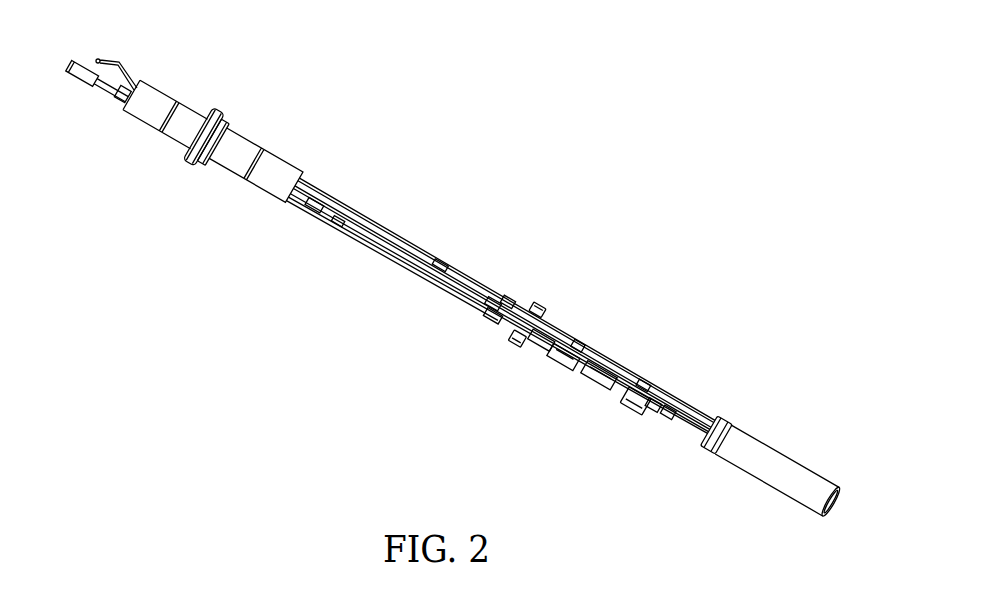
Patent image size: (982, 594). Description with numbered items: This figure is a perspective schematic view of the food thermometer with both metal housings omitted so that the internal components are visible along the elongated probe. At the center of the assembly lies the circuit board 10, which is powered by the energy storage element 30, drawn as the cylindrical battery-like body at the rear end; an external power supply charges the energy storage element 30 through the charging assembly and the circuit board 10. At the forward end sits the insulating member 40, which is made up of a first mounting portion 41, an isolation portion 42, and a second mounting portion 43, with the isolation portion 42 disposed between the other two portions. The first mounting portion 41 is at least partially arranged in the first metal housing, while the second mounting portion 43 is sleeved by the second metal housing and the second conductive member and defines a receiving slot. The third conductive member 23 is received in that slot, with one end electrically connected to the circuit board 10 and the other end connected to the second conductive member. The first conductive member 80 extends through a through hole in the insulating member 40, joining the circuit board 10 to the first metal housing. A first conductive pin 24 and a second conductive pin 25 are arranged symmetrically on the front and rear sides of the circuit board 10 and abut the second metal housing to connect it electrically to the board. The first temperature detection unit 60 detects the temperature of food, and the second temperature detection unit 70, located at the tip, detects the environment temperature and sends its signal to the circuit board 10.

The circuit board 10 is at (497, 297).
The third conductive member 23 is at (347, 220).
The first conductive pin 24 is at (547, 308).
The second conductive pin 25 is at (512, 347).
The energy storage element 30 is at (745, 438).
The insulating member 40 is at (224, 129).
The first mounting portion 41 is at (187, 110).
The isolation portion 42 is at (213, 112).
The second mounting portion 43 is at (240, 130).
The first temperature detection unit 60 is at (633, 407).
The second temperature detection unit 70 is at (74, 74).
The first conductive member 80 is at (104, 62).